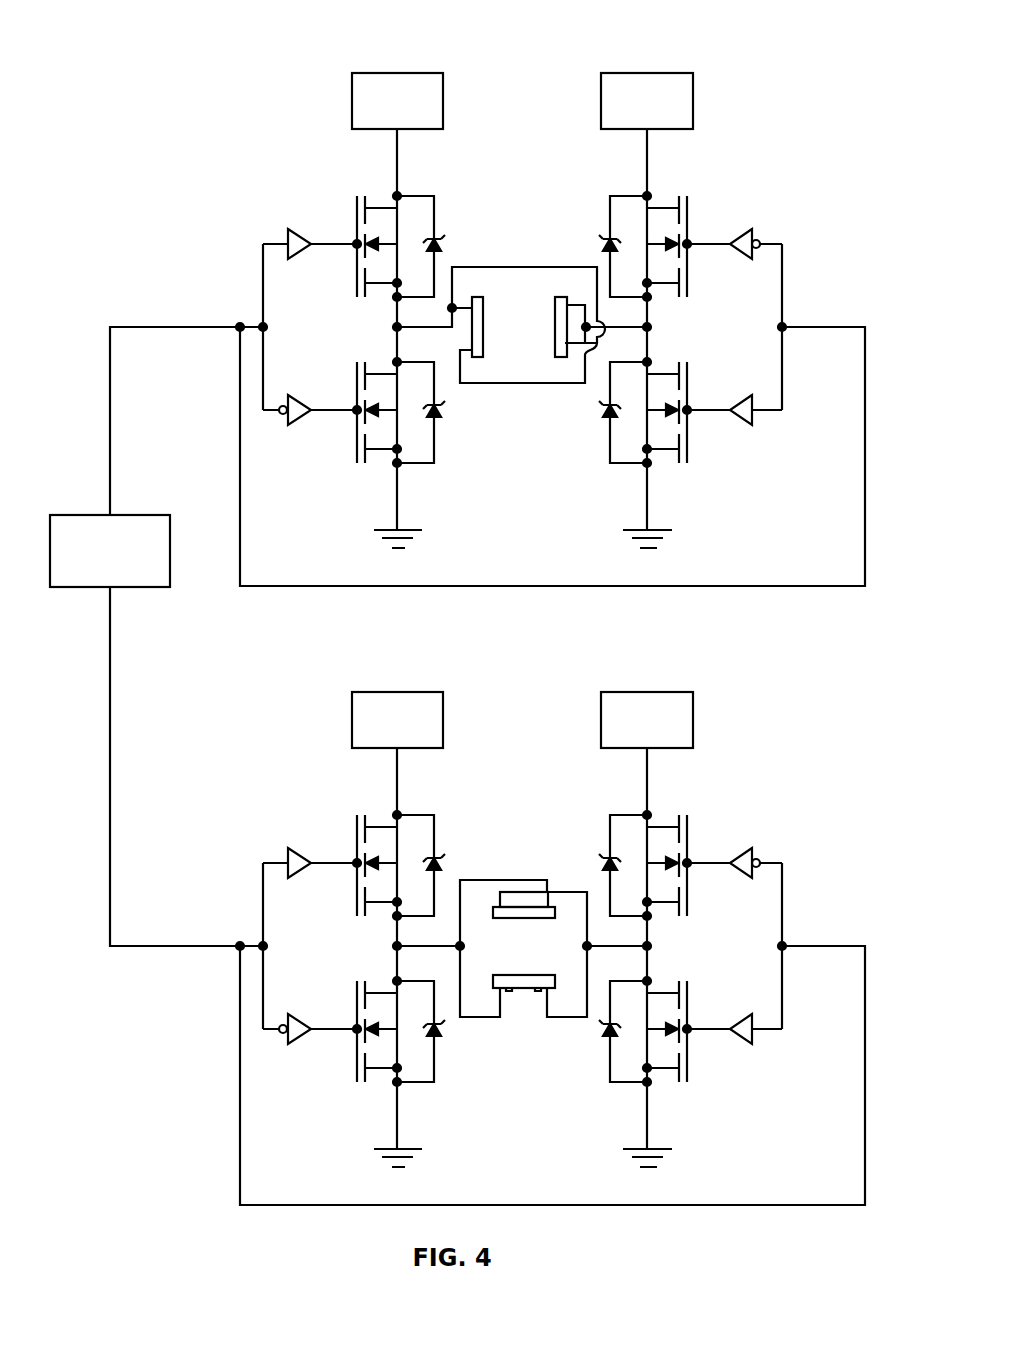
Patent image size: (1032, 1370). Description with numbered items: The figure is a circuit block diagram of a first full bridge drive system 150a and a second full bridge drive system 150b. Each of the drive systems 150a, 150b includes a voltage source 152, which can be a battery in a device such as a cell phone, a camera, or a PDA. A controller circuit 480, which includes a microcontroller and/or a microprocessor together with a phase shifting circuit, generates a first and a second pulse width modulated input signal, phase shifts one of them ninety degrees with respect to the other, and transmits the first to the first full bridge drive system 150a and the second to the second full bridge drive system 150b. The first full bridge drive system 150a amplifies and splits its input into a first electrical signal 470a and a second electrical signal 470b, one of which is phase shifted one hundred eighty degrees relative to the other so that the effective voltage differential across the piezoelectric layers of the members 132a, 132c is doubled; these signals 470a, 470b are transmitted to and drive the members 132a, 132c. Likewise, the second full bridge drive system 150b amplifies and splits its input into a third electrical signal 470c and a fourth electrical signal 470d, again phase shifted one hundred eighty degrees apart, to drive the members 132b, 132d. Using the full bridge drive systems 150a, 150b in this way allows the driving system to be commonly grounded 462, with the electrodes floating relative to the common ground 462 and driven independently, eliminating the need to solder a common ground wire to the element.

The first full bridge drive system 150a is at (752, 674).
The second full bridge drive system 150b is at (752, 55).
The voltage source 152 is at (412, 73).
The common ground 462 is at (388, 530).
The controller circuit 480 is at (128, 515).
The first electrical signal 470a is at (498, 880).
The second electrical signal 470b is at (566, 1020).
The third electrical signal 470c is at (487, 267).
The fourth electrical signal 470d is at (522, 384).
The member 132a is at (545, 918).
The member 132b is at (563, 358).
The member 132c is at (502, 975).
The member 132d is at (486, 358).